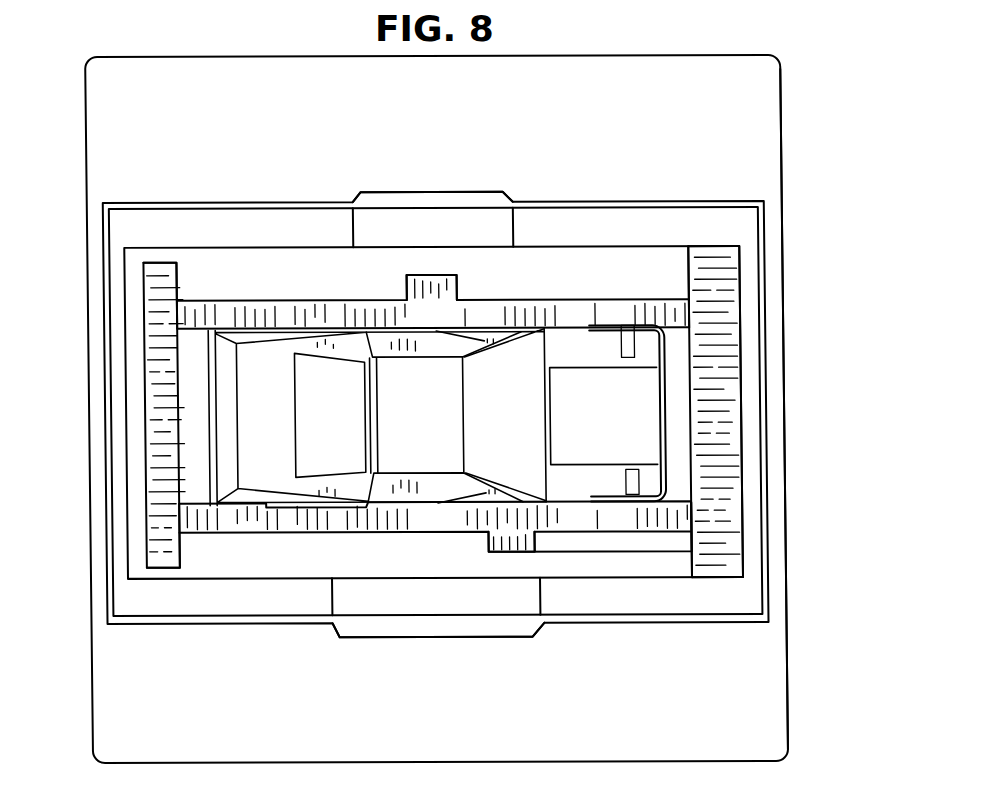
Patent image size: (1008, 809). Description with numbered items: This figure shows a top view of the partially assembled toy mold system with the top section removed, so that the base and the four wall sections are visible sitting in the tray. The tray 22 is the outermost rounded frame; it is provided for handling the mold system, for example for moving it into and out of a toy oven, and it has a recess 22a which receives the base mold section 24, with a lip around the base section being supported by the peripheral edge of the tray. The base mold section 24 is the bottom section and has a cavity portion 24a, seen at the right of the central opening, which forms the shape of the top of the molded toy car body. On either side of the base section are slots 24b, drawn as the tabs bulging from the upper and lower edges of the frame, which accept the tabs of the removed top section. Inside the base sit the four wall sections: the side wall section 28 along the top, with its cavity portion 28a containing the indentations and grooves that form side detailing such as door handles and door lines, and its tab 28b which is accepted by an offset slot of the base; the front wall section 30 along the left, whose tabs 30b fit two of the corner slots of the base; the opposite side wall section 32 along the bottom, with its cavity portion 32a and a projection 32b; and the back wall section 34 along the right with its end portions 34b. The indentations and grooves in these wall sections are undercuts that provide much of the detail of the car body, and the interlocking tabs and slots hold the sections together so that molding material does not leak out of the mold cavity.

The tray 22 is at (792, 600).
The recess 22a is at (775, 716).
The base mold section 24 is at (752, 608).
The cavity portion 24a is at (568, 428).
The slots 24b is at (517, 612).
The side wall section 28 is at (557, 313).
The cavity portion 28a is at (288, 330).
The tab 28b is at (450, 284).
The front wall section 30 is at (155, 407).
The tabs 30b is at (170, 553).
The side wall section 32 is at (474, 515).
The cavity portion 32a is at (313, 505).
The lower plate projection 32b is at (532, 554).
The back wall section 34 is at (728, 389).
The right side wall end portion 34b is at (730, 565).